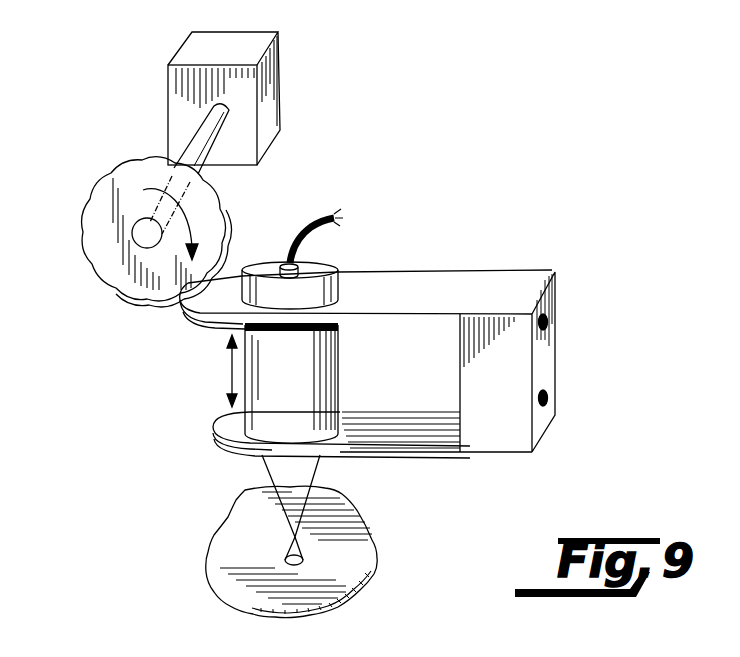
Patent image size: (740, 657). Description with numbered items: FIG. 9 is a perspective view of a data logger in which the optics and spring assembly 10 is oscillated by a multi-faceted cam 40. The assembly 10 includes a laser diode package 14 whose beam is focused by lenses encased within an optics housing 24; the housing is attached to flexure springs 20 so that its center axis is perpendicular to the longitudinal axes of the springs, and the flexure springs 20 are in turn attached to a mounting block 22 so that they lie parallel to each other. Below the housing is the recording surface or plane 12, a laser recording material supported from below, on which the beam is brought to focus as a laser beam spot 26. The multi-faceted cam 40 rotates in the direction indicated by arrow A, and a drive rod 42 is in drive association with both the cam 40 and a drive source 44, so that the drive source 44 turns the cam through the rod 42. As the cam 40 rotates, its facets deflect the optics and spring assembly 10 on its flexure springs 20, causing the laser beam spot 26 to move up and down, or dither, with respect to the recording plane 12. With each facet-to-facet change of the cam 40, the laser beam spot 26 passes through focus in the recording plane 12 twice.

The optomechanical assembly 10 is at (487, 233).
The recording surface 12 is at (353, 547).
The laser diode package 14 is at (270, 263).
The flexure springs 20 is at (438, 300).
The mounting block 22 is at (545, 368).
The optics housing 24 is at (340, 382).
The laser beam spot 26 is at (292, 537).
The multi-faceted cam 40 is at (87, 257).
The drive rod 42 is at (198, 147).
The drive source 44 is at (193, 53).